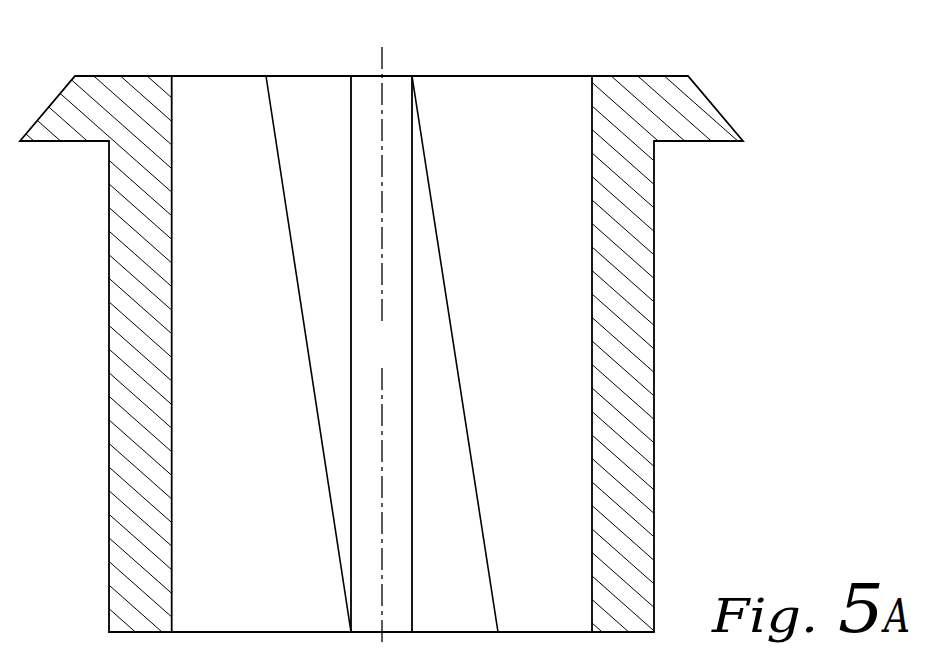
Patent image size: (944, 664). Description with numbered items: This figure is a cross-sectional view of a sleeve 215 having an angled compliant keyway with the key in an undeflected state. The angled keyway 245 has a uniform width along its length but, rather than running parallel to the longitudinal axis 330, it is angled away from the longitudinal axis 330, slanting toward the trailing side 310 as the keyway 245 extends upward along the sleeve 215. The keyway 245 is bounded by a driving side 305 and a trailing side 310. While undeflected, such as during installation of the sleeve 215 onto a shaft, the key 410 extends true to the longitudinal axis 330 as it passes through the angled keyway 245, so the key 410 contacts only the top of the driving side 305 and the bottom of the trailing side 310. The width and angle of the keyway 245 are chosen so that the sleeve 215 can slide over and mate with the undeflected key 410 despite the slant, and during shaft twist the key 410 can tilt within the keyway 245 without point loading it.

The sleeve 215 is at (525, 195).
The angled keyway 245 is at (327, 146).
The driving side 305 is at (467, 402).
The trailing side 310 is at (300, 333).
The longitudinal axis 330 is at (379, 44).
The key 410 is at (398, 360).